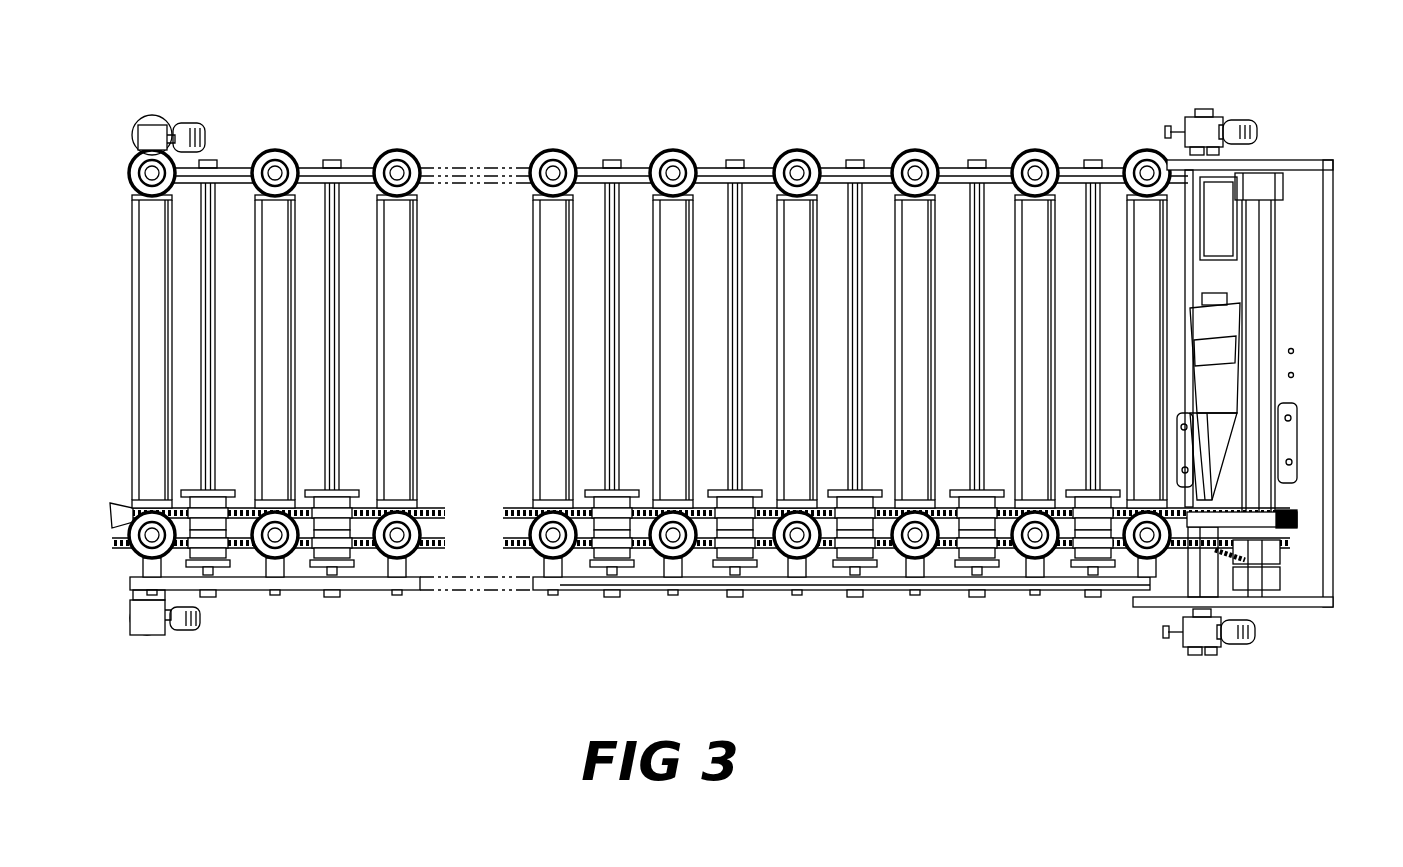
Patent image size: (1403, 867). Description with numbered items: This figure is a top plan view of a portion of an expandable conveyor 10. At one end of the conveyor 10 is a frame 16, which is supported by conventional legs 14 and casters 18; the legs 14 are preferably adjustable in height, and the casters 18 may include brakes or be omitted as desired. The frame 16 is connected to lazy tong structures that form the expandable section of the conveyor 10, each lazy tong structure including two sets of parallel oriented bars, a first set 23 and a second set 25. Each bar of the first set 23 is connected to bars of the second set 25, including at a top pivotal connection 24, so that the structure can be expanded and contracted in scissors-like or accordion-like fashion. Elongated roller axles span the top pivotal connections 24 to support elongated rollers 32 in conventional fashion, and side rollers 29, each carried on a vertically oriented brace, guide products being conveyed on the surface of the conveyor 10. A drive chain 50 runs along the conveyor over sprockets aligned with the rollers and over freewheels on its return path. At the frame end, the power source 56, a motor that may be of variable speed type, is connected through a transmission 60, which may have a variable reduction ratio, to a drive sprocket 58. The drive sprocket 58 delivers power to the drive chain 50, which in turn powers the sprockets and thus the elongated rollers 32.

The conveyor 10 is at (478, 91).
The legs 14 is at (157, 128).
The frame 16 is at (1290, 165).
The casters 18 is at (133, 142).
The first set 23 is at (315, 187).
The top pivotal connection 24 is at (390, 600).
The second set 25 is at (358, 172).
The side rollers 29 is at (645, 157).
The elongated rollers 32 is at (540, 350).
The drive chain 50 is at (510, 515).
The power source 56 is at (1222, 377).
The drive sprocket 58 is at (1297, 515).
The transmission 60 is at (1297, 445).